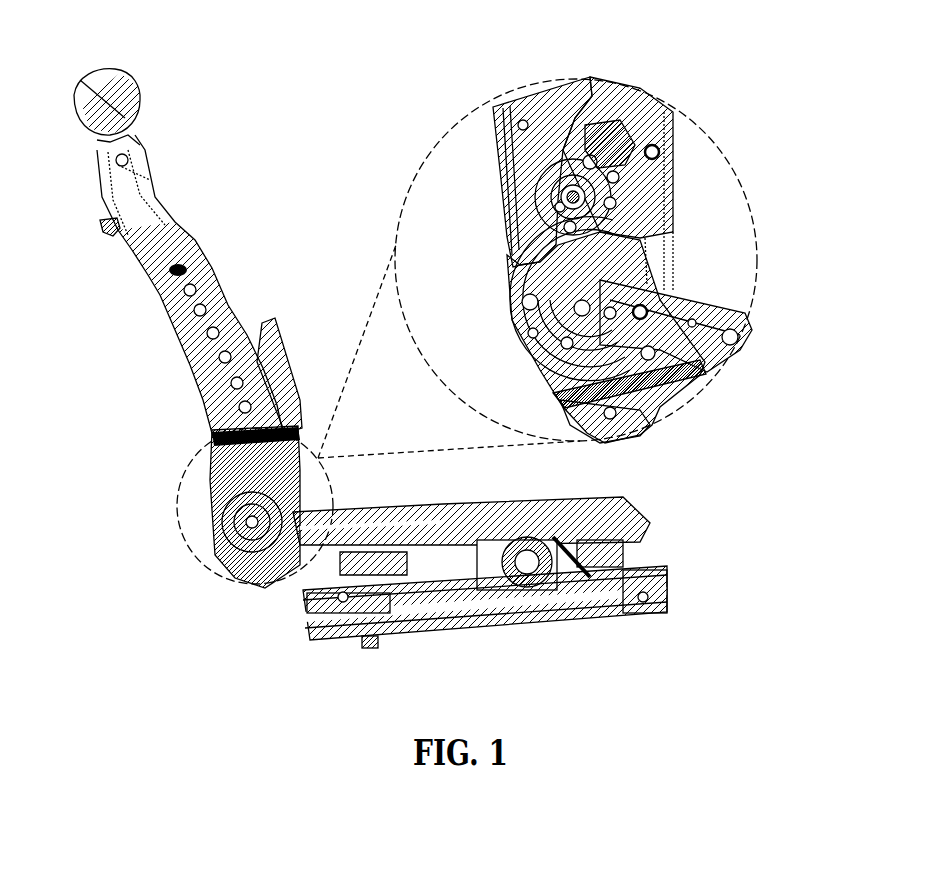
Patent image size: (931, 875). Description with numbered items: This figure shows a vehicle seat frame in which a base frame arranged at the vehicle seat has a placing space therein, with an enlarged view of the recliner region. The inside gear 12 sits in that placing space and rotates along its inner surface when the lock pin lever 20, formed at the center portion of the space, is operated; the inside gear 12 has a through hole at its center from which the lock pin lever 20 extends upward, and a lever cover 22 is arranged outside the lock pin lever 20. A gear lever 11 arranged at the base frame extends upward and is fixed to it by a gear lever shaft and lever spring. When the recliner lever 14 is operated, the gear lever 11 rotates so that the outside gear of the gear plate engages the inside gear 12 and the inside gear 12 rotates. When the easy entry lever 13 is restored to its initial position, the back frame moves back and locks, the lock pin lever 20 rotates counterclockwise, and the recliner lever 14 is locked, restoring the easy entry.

The gear lever 11 is at (645, 167).
The inside gear 12 is at (578, 216).
The easy entry lever 13 is at (592, 100).
The recliner lever 14 is at (603, 330).
The lock pin lever 20 is at (595, 138).
The lever cover 22 is at (565, 163).